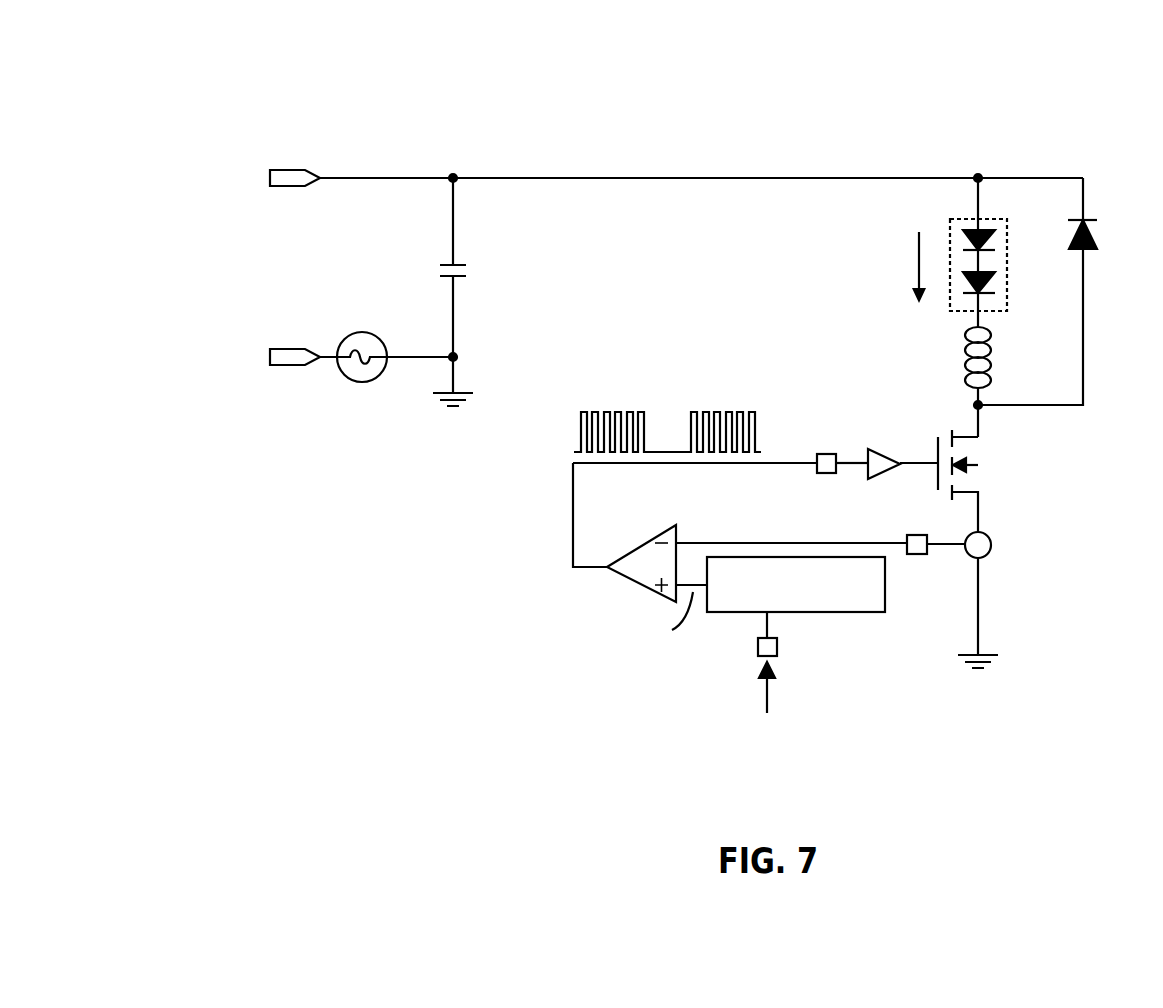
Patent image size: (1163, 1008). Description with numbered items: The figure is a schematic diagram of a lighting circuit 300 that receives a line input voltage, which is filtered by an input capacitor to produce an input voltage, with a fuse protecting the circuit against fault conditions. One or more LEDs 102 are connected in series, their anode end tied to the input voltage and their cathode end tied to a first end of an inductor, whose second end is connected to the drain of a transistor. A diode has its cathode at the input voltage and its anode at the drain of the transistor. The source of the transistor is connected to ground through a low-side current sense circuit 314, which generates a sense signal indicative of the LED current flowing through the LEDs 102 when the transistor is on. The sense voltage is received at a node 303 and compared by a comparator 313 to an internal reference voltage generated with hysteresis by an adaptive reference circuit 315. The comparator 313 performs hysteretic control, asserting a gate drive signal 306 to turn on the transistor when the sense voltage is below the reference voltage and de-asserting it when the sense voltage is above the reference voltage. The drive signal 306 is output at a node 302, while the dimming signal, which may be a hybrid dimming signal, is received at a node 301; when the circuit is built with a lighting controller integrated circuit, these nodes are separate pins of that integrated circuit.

The lighting circuit 300 is at (765, 126).
The LEDs 102 is at (1007, 272).
The gate drive signal 306 is at (714, 393).
The node 302 is at (826, 453).
The node 303 is at (916, 535).
The comparator 313 is at (634, 551).
The low-side current sense circuit 314 is at (985, 533).
The adaptive reference circuit 315 is at (850, 613).
The node 301 is at (758, 647).